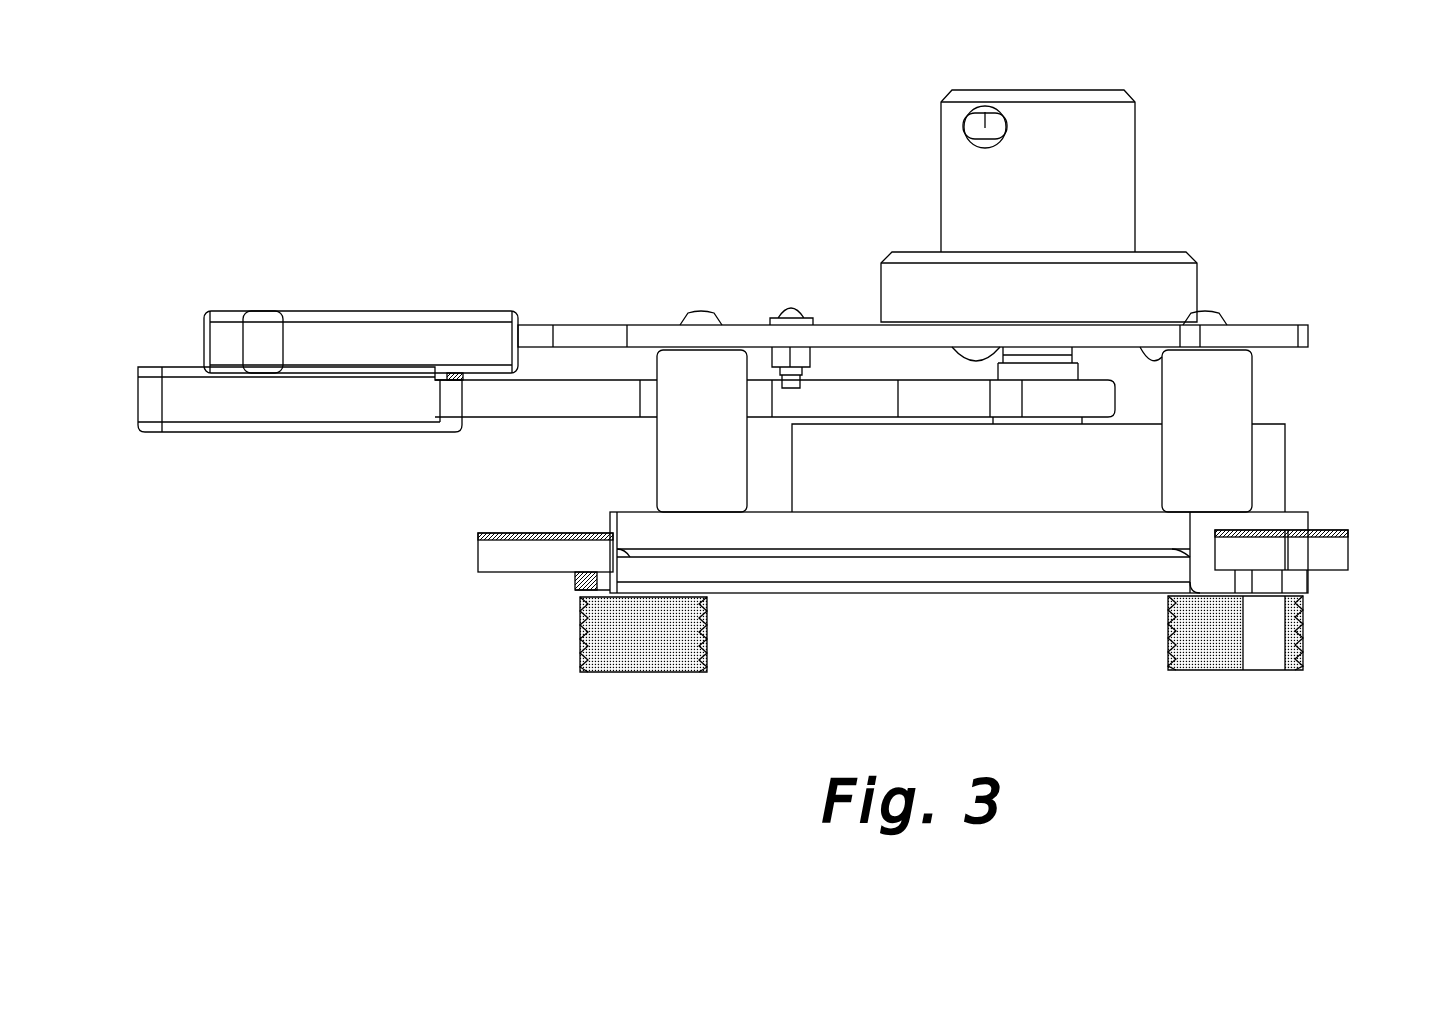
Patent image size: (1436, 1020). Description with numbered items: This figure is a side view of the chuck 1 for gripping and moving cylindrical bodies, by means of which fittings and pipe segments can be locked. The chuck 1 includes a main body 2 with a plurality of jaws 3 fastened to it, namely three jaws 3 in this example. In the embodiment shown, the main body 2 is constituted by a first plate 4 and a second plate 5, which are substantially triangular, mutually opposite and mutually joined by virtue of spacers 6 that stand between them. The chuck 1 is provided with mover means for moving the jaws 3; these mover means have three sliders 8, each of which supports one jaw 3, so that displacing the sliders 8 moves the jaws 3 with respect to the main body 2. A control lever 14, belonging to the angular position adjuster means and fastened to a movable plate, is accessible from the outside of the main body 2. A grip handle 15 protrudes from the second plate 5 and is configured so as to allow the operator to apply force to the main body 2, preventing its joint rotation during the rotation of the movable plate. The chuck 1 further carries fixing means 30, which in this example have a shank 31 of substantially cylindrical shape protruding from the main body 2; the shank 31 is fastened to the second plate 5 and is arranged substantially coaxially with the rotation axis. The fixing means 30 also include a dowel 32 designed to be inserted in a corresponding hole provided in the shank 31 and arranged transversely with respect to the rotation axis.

The chuck 1 is at (1320, 207).
The main body 2 is at (1323, 455).
The jaws 3 is at (640, 650).
The first plate 4 is at (893, 535).
The second plate 5 is at (745, 331).
The spacers 6 is at (688, 455).
The sliders 8 is at (520, 555).
The control lever 14 is at (528, 400).
The grip handle 15 is at (383, 343).
The fixing means 30 is at (867, 217).
The shank 31 is at (1073, 178).
The dowel 32 is at (985, 127).